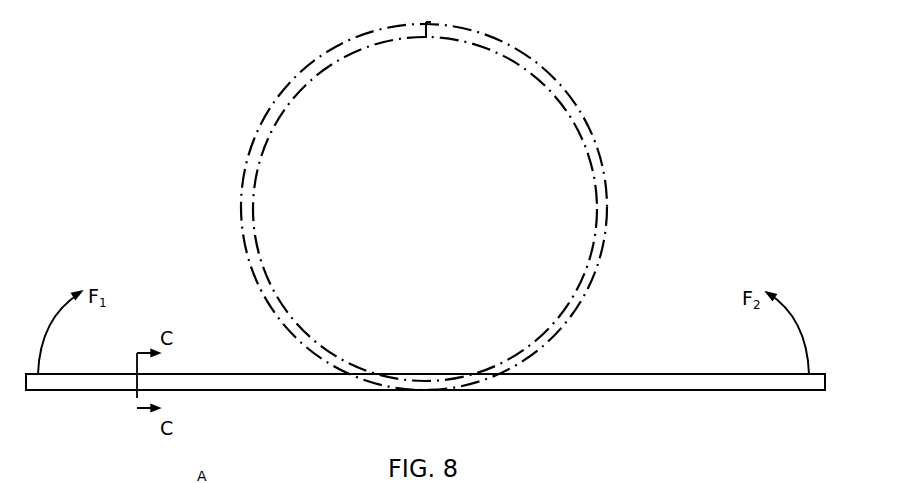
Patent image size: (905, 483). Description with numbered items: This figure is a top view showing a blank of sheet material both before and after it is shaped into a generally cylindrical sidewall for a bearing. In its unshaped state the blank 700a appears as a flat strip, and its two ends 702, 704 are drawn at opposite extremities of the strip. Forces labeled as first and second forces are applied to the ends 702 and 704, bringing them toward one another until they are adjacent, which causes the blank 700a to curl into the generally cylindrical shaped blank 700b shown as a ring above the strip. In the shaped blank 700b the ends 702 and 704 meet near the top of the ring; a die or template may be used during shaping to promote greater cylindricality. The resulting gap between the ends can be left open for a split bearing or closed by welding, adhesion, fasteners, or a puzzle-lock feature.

The blank before shaping 700a is at (275, 390).
The shaped blank 700b is at (610, 218).
The end 702 is at (26, 392).
The end 704 is at (825, 392).